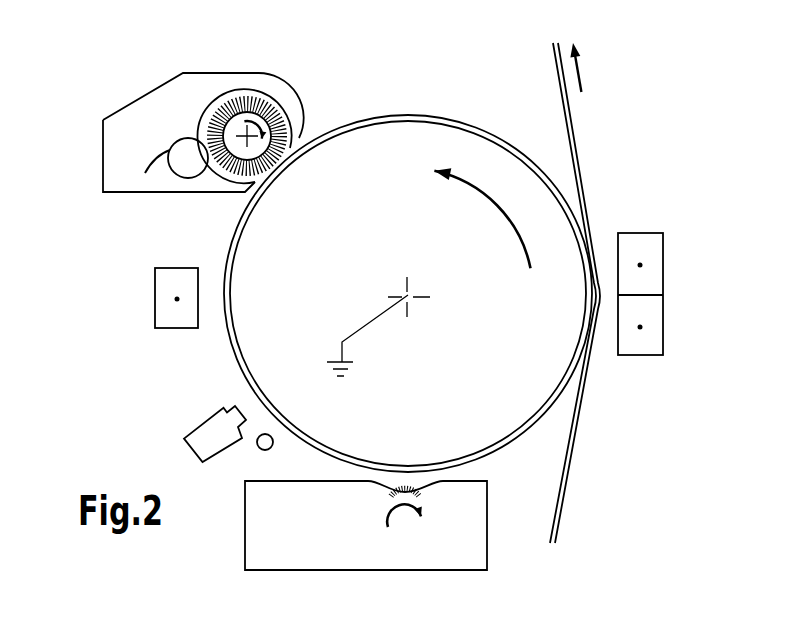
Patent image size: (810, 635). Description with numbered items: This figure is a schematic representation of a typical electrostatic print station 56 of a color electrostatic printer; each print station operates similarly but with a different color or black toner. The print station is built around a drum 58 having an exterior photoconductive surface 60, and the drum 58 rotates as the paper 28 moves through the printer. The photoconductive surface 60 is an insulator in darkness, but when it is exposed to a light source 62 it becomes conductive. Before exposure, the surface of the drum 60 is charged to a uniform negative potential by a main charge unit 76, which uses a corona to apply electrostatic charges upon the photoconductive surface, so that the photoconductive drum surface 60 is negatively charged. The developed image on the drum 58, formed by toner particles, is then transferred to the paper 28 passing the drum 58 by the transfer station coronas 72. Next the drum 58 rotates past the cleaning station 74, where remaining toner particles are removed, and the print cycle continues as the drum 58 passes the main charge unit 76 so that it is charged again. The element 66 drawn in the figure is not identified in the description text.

The paper 28 is at (572, 118).
The electrostatic print station 56 is at (106, 84).
The drum 58 is at (337, 305).
The photoconductive surface 60 is at (232, 357).
The light source 62 is at (198, 428).
The charging unit 66 is at (262, 522).
The transfer station coronas 72 is at (663, 269).
The cleaning station 74 is at (137, 119).
The main charge unit 76 is at (160, 266).